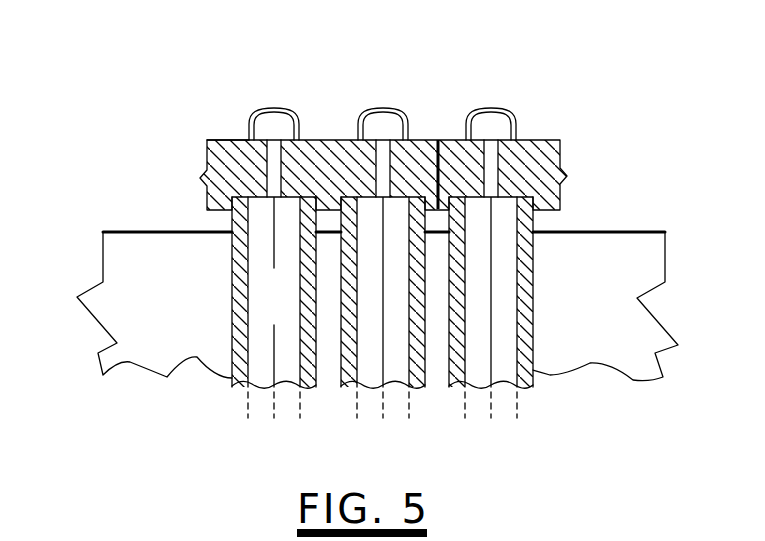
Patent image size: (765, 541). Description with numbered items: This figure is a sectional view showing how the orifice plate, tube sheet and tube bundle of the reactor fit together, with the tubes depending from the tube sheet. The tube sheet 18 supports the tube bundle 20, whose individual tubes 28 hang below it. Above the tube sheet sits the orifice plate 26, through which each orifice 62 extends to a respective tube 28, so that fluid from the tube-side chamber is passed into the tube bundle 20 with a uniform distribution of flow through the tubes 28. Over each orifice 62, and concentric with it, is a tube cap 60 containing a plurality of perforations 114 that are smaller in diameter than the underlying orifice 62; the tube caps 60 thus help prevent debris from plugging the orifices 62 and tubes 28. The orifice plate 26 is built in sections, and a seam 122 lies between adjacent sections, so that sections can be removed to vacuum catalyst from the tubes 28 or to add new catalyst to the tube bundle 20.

The tube sheet 18 is at (167, 327).
The tube bundle 20 is at (259, 312).
The orifice plate 26 is at (328, 141).
The tube 28 is at (263, 410).
The tube cap 60 is at (266, 109).
The orifice 62 is at (275, 148).
The perforation 114 is at (249, 136).
The seam 122 is at (440, 141).